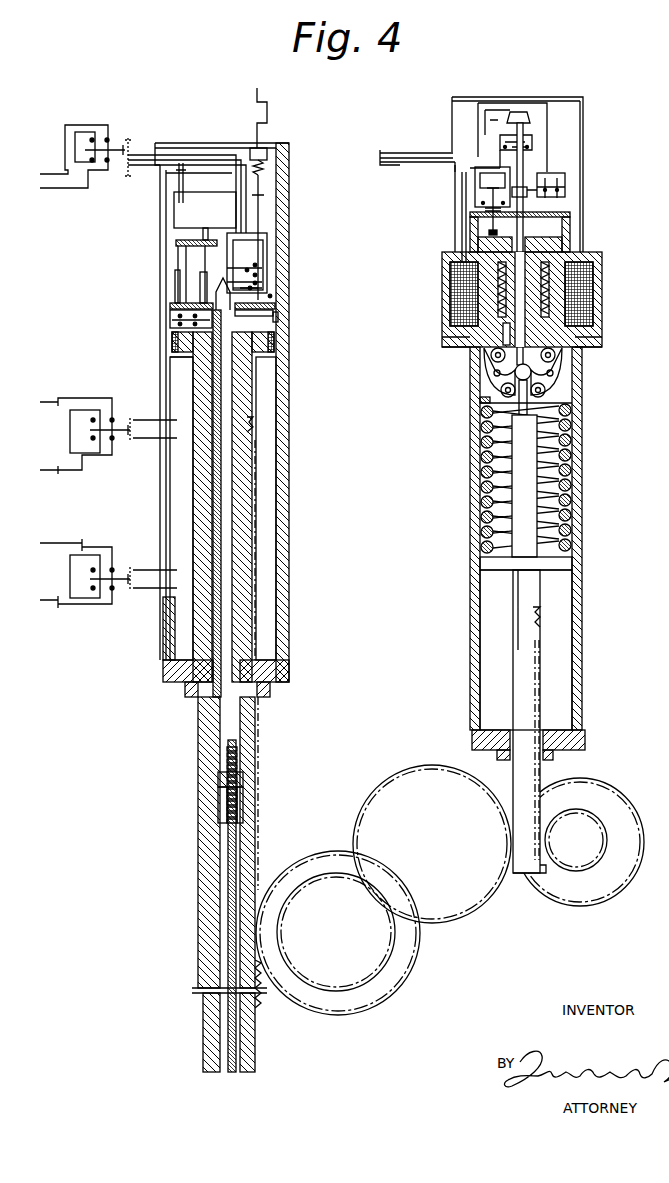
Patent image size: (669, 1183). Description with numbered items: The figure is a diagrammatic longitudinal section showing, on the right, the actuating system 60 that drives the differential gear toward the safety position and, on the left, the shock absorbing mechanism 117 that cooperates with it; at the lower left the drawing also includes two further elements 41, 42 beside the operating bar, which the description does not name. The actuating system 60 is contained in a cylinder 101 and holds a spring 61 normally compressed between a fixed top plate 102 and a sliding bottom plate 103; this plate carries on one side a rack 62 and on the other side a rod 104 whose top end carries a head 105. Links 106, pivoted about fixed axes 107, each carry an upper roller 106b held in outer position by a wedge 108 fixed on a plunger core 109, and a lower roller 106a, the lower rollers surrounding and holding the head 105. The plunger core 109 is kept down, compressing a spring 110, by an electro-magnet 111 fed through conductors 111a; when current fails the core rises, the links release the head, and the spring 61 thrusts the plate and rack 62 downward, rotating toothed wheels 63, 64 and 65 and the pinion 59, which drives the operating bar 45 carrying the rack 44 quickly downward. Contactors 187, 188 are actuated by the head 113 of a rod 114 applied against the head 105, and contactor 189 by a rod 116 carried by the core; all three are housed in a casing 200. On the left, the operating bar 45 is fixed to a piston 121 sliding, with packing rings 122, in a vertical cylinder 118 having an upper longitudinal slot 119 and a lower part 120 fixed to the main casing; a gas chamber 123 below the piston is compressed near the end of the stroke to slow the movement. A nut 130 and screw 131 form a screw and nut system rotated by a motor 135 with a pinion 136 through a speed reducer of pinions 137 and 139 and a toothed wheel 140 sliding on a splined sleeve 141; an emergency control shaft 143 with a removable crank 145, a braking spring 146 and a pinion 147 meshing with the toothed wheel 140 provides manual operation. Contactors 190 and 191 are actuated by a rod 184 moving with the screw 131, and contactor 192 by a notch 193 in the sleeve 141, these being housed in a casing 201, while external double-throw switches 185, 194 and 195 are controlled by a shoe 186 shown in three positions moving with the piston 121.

The tape drive capstan 41 is at (400, 995).
The tape reel 42 is at (420, 947).
The rack 44 is at (258, 1012).
The operating bar 45 is at (210, 962).
The pinion 59 is at (308, 888).
The actuating system 60 is at (587, 484).
The spring 61 is at (481, 468).
The rack 62 is at (535, 745).
The toothed wheel 63 is at (577, 812).
The toothed wheel 64 is at (562, 905).
The toothed wheel 65 is at (433, 766).
The cylinder 101 is at (583, 650).
The fixed top plate 102 is at (487, 399).
The sliding bottom plate 103 is at (565, 562).
The rod 104 is at (520, 535).
The head 105 is at (533, 375).
The links 106 is at (489, 377).
The lower roller 106a is at (545, 390).
The upper roller 106b is at (557, 357).
The axes 107 is at (493, 370).
The wedge 108 is at (562, 340).
The plunger core 109 is at (557, 270).
The spring 110 is at (479, 255).
The electro-magnet 111 is at (455, 302).
The conductors 111a is at (425, 150).
The head 113 is at (527, 190).
The rod 114 is at (523, 228).
The rod 116 is at (495, 222).
The shock absorbing mechanism 117 is at (295, 527).
The vertical cylinder 118 is at (289, 590).
The longitudinal slot 119 is at (170, 500).
The lower part 120 is at (170, 652).
The piston 121 is at (170, 358).
The packing rings 122 is at (274, 345).
The chamber 123 is at (270, 637).
The nut 130 is at (222, 778).
The screw 131 is at (237, 802).
The motor 135 is at (223, 224).
The pinion 136 is at (180, 241).
The pinion 137 is at (176, 250).
The pinion 139 is at (185, 300).
The toothed wheel 140 is at (279, 318).
The splined sleeve 141 is at (237, 378).
The control shaft 143 is at (260, 215).
The removable crank 145 is at (268, 110).
The braking spring 146 is at (268, 158).
The pinion 147 is at (272, 296).
The rod 184 is at (228, 418).
The external double-throw switch 185 is at (95, 125).
The shoe 186 is at (124, 168).
The contactor 187 is at (522, 118).
The contactor 188 is at (566, 193).
The contactor 189 is at (487, 195).
The contactor 190 is at (267, 270).
The contactor 191 is at (267, 288).
The contactor 192 is at (170, 320).
The notch 193 is at (273, 316).
The external double-throw switch 194 is at (131, 572).
The external double-throw switch 195 is at (130, 445).
The casing 200 is at (503, 97).
The casing 201 is at (205, 143).